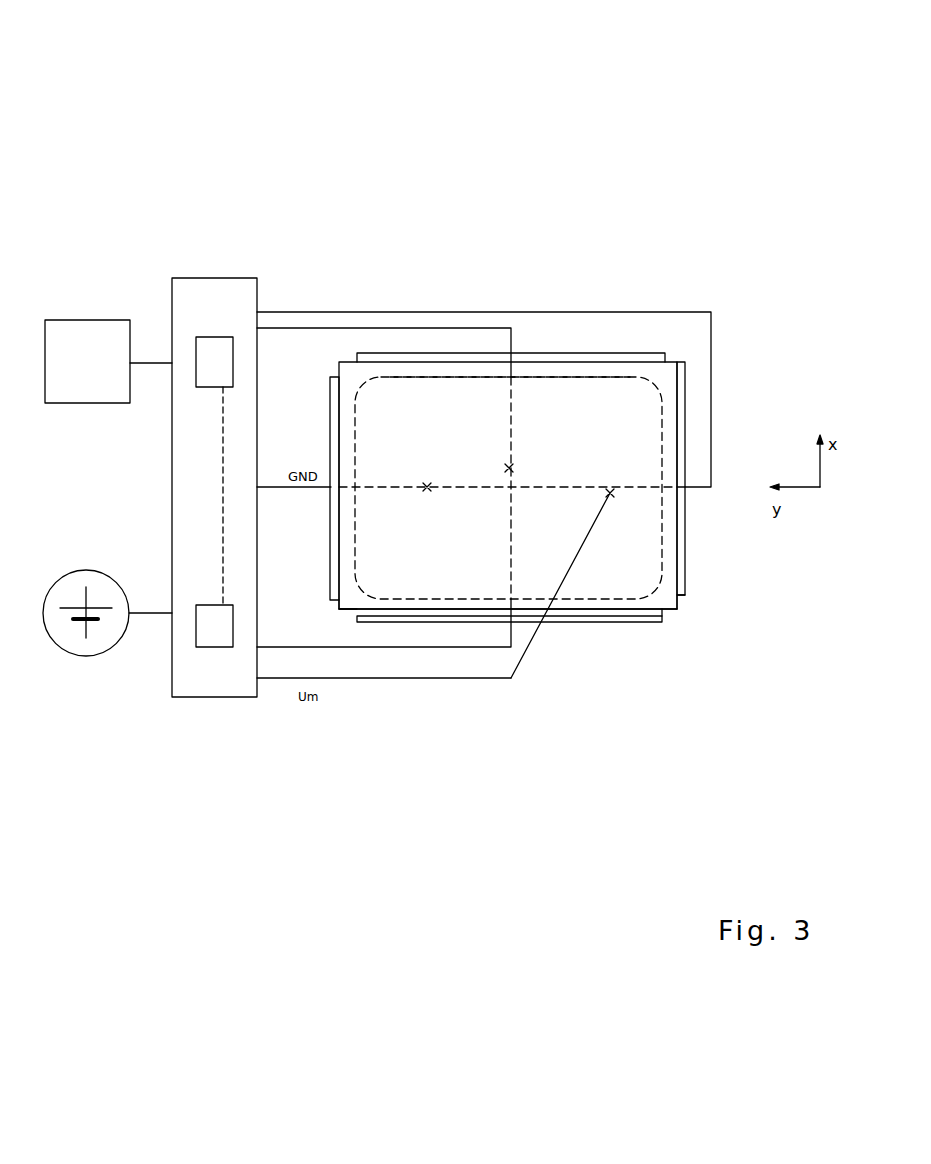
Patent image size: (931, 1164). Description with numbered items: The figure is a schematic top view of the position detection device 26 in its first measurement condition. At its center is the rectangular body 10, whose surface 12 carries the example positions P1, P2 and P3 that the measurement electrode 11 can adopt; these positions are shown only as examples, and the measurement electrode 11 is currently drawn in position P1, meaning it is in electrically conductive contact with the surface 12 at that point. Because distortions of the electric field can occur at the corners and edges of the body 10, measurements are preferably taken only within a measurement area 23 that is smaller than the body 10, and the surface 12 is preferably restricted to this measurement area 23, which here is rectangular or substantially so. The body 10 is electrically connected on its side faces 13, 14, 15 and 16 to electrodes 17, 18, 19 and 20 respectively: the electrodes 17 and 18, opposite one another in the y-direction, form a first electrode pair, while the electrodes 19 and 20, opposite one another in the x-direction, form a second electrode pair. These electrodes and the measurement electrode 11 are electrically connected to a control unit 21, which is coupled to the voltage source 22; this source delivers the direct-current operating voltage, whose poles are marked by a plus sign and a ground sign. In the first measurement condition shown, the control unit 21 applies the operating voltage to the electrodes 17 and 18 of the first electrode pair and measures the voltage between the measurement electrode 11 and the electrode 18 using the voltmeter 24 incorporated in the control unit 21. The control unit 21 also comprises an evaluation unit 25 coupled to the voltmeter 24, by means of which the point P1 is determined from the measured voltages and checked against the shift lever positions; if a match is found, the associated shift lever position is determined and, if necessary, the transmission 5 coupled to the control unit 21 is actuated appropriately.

The position detection device 26 is at (185, 80).
The transmission 5 is at (78, 320).
The control unit 21 is at (238, 278).
The evaluation unit 25 is at (210, 387).
The voltmeter 24 is at (205, 605).
The voltage source 22 is at (77, 572).
The body 10 is at (682, 372).
The measurement electrode 11 is at (533, 643).
The surface 12 is at (405, 395).
The measurement area 23 is at (470, 380).
The electrode 20 is at (565, 353).
The side face 16 is at (680, 368).
The electrode 18 is at (331, 548).
The side face 14 is at (342, 611).
The electrode 17 is at (687, 548).
The side face 13 is at (688, 597).
The side face 15 is at (670, 612).
The electrode 19 is at (597, 620).
The position P1 is at (610, 497).
The position P2 is at (427, 492).
The position P3 is at (512, 466).